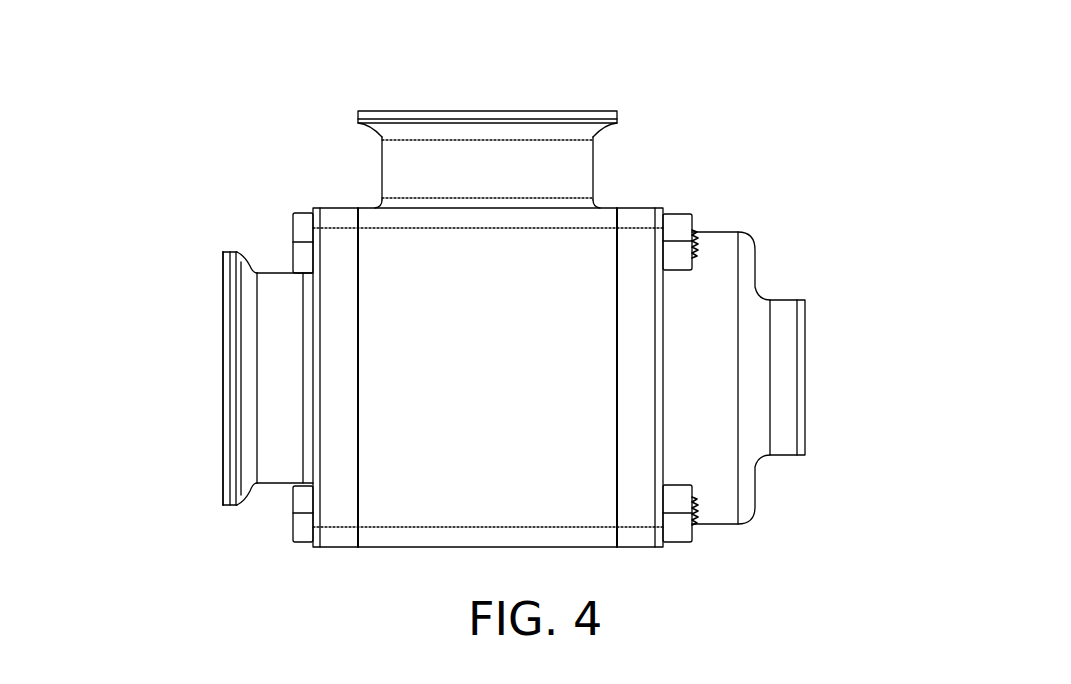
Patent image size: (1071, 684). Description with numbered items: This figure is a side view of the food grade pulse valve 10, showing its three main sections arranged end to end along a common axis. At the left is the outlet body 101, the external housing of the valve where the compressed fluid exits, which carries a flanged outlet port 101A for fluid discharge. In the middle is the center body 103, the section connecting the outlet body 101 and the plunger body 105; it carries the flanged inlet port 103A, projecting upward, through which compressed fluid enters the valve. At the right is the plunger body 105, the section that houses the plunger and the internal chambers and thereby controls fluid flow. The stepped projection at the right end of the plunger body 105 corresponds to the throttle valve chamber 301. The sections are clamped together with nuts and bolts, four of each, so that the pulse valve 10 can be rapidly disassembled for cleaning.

The pulse valve 10 is at (268, 182).
The outlet body 101 is at (274, 477).
The outlet port 101A is at (222, 388).
The center body 103 is at (595, 173).
The inlet port 103A is at (470, 110).
The plunger body 105 is at (748, 508).
The throttle valve chamber 301 is at (806, 375).